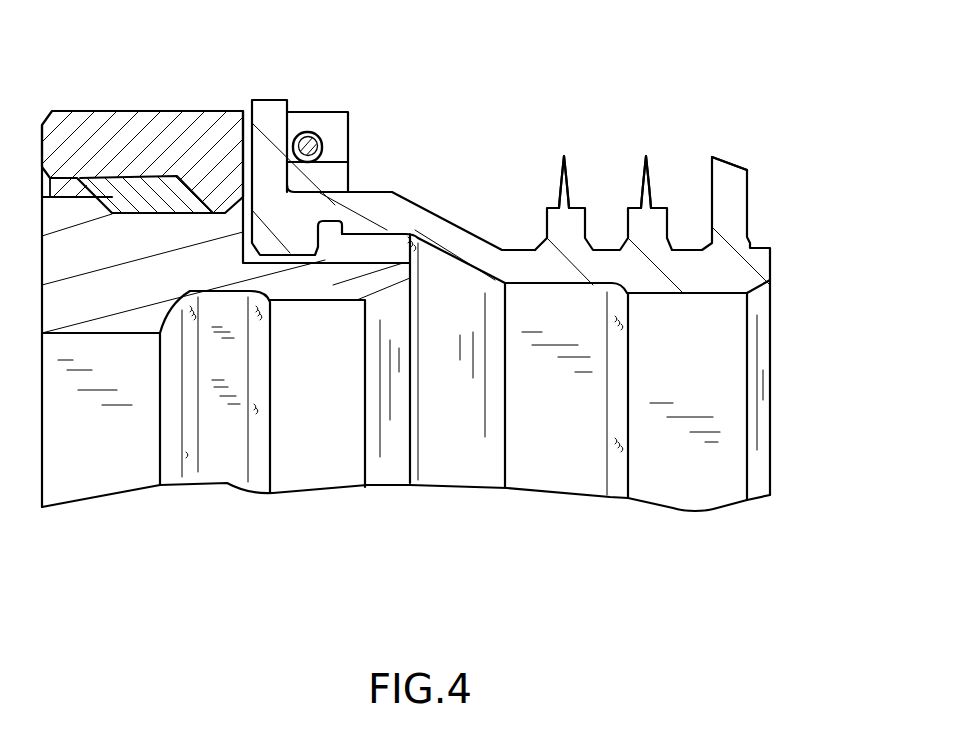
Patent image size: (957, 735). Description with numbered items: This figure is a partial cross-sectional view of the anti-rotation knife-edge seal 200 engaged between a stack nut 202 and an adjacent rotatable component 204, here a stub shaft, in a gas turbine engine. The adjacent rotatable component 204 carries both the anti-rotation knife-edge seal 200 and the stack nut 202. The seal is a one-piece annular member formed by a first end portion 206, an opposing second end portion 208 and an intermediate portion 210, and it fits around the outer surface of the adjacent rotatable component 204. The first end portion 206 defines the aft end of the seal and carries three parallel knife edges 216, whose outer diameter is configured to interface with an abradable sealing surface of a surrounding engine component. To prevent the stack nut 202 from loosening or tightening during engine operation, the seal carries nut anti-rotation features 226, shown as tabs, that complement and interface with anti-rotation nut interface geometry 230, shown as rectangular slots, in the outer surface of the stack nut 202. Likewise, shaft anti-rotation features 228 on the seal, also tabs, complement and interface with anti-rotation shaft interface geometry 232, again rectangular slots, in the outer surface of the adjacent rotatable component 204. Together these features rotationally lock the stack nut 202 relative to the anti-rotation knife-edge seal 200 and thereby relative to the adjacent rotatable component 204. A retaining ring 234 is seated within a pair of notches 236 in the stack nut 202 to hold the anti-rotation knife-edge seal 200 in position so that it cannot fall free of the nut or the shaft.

The anti-rotation knife-edge seal 200 is at (452, 222).
The stack nut 202 is at (122, 110).
The adjacent rotatable component 204 is at (73, 303).
The first end portion 206 is at (755, 136).
The second end portion 208 is at (366, 194).
The intermediate portion 210 is at (370, 203).
The knife edge 216 is at (748, 176).
The nut anti-rotation features 226 is at (250, 150).
The shaft anti-rotation features 228 is at (277, 253).
The anti-rotation nut interface geometry 230 is at (252, 232).
The anti-rotation shaft interface geometry 232 is at (330, 196).
The retaining ring 234 is at (308, 134).
The notches 236 is at (349, 129).